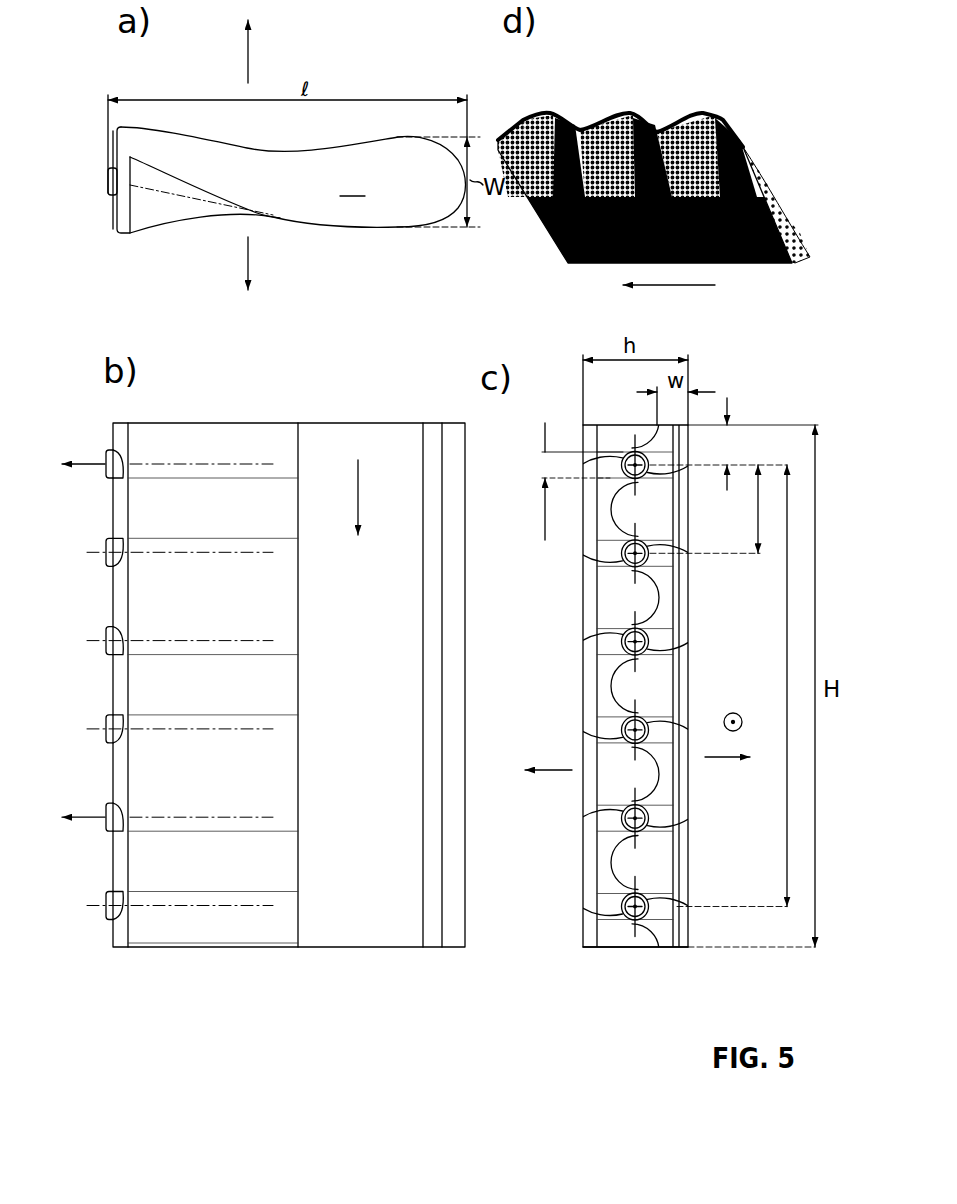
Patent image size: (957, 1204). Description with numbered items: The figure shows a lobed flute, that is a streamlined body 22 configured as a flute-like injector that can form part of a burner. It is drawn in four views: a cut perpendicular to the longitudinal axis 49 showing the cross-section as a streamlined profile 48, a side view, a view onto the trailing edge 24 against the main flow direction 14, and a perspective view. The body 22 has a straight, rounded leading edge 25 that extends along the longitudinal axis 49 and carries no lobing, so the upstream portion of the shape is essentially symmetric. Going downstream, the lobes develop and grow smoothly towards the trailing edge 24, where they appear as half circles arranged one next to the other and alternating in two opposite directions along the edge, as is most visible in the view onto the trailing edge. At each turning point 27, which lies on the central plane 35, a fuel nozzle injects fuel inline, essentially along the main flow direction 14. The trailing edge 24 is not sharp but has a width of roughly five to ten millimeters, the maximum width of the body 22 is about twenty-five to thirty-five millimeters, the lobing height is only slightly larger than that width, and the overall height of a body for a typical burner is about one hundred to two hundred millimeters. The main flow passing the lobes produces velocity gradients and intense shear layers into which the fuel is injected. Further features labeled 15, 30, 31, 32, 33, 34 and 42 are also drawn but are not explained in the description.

The main flow direction 14 is at (742, 727).
The cutting tooth 15 is at (110, 180).
The streamlined body 22 is at (410, 233).
The trailing edge 24 is at (115, 217).
The leading edge 25 is at (470, 200).
The turning point 27 is at (608, 473).
The direction of movement 30 is at (248, 262).
The opposite direction of movement 31 is at (248, 65).
The blade edge 32 is at (583, 515).
The blade body 33 is at (350, 137).
The cutting direction 34 is at (83, 468).
The central plane 35 is at (650, 947).
The row of cutting teeth 42 is at (103, 598).
The streamlined profile 48 is at (780, 217).
The longitudinal axis 49 is at (531, 425).